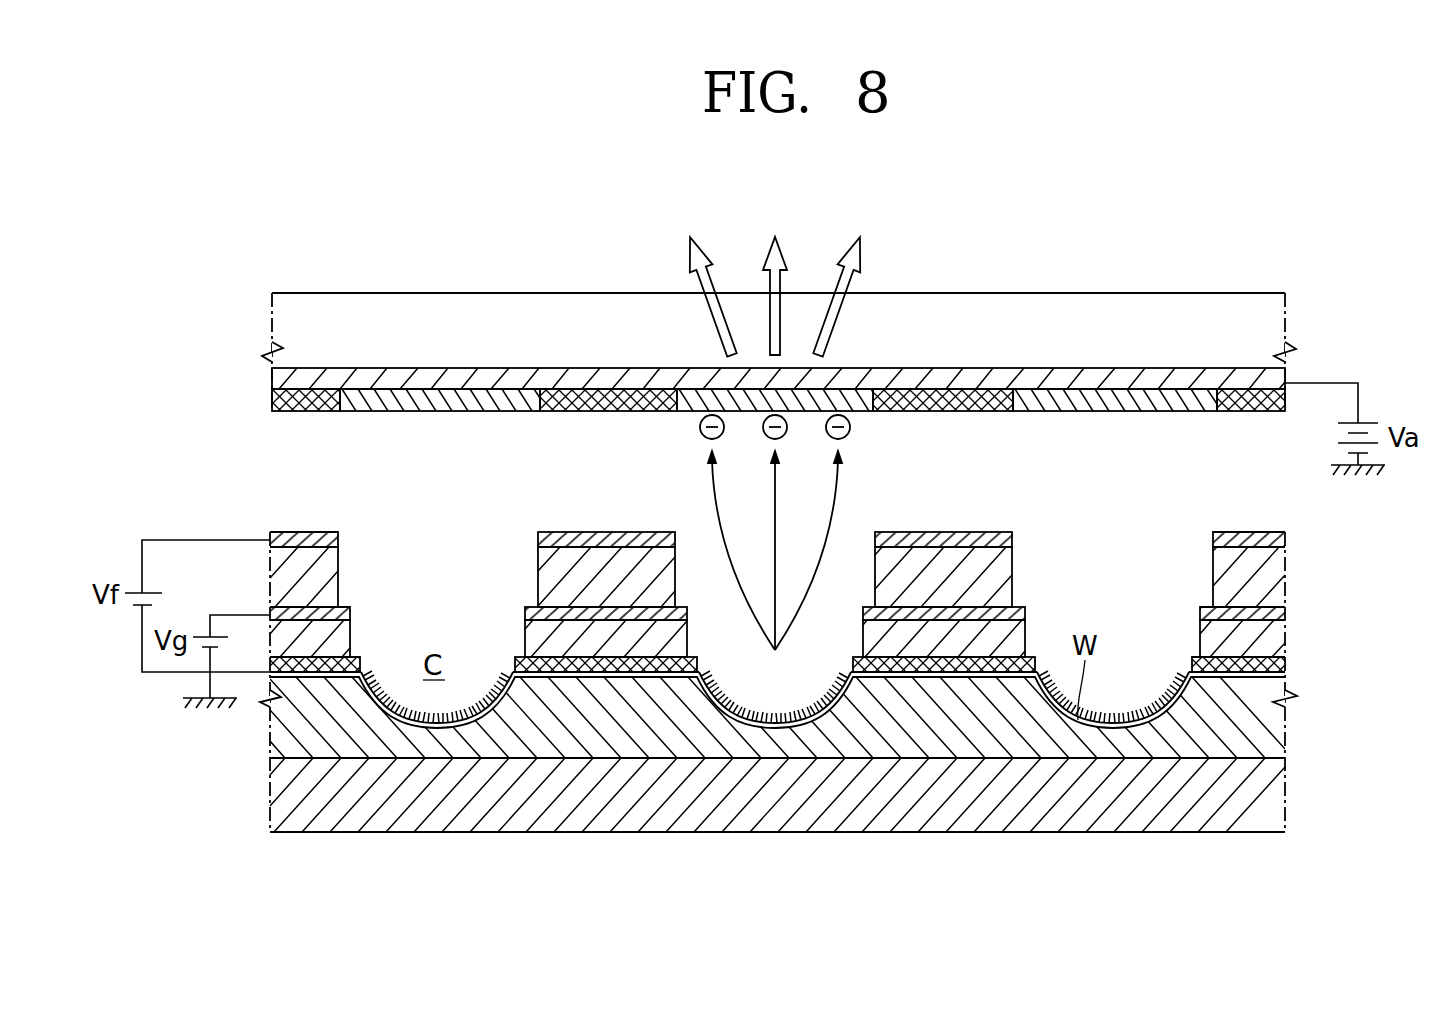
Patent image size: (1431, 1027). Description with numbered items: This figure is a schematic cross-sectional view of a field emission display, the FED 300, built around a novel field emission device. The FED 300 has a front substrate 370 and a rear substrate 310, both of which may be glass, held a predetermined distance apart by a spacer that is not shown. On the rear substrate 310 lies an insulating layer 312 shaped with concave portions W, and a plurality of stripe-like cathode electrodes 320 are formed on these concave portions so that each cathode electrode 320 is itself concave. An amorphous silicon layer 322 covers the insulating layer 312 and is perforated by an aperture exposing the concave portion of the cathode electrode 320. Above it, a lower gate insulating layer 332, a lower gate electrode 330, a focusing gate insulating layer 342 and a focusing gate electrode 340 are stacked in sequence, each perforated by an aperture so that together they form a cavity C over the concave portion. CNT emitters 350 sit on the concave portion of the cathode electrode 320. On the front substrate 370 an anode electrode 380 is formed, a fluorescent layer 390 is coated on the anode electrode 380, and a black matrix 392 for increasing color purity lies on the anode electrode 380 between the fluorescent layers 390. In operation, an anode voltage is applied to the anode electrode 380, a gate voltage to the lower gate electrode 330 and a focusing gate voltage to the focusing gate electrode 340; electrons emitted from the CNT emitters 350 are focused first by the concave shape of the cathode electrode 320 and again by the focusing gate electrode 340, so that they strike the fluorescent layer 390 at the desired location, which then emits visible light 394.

The FED 300 is at (495, 151).
The rear substrate 310 is at (1277, 797).
The insulating layer 312 is at (1277, 728).
The cathode electrode 320 is at (1100, 728).
The amorphous silicon layer 322 is at (1285, 680).
The lower gate electrode 330 is at (1285, 617).
The lower gate insulating layer 332 is at (1277, 646).
The focusing gate electrode 340 is at (1285, 545).
The focusing gate insulating layer 342 is at (1277, 578).
The CNT emitters 350 is at (1148, 727).
The front substrate 370 is at (1051, 305).
The anode electrode 380 is at (1148, 380).
The fluorescent layer 390 is at (443, 405).
The black matrix 392 is at (612, 405).
The visible light 394 is at (838, 282).